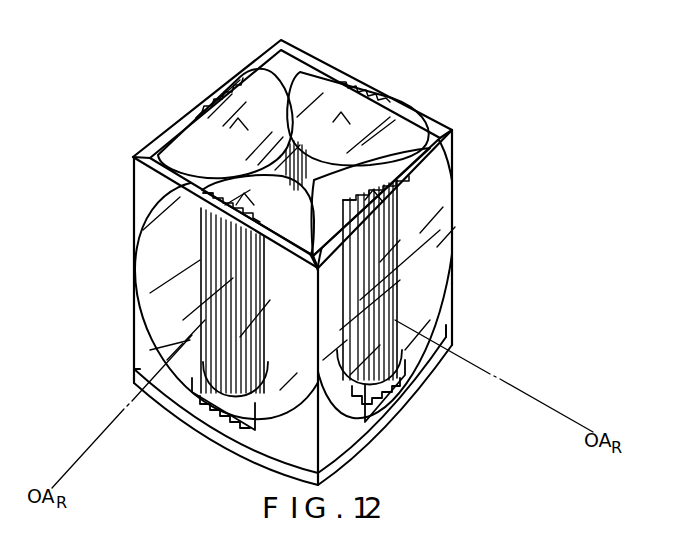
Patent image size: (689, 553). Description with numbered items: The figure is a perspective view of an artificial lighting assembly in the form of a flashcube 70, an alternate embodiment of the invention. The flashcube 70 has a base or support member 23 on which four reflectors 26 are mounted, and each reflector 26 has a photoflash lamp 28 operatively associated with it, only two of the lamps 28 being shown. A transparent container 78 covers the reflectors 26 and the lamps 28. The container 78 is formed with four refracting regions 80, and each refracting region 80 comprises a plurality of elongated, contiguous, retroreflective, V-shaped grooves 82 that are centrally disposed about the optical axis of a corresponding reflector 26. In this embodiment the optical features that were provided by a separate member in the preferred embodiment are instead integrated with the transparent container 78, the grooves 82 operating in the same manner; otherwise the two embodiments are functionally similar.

The flashcube 70 is at (428, 99).
The transparent container 78 is at (323, 57).
The base or support member 23 is at (373, 444).
The reflector 26 is at (251, 100).
The photoflash lamp 28 is at (270, 314).
The refracting region 80 is at (214, 86).
The V-shaped groove 82 is at (201, 108).